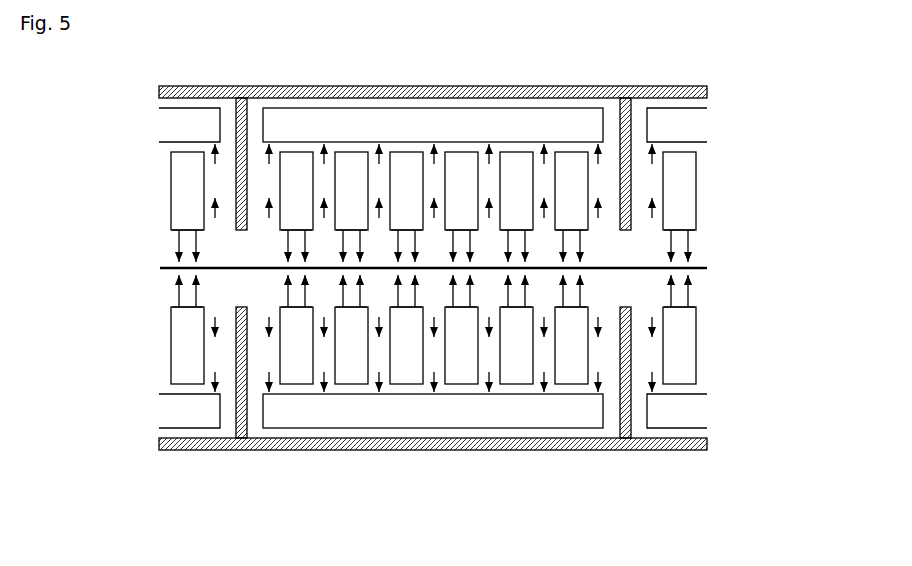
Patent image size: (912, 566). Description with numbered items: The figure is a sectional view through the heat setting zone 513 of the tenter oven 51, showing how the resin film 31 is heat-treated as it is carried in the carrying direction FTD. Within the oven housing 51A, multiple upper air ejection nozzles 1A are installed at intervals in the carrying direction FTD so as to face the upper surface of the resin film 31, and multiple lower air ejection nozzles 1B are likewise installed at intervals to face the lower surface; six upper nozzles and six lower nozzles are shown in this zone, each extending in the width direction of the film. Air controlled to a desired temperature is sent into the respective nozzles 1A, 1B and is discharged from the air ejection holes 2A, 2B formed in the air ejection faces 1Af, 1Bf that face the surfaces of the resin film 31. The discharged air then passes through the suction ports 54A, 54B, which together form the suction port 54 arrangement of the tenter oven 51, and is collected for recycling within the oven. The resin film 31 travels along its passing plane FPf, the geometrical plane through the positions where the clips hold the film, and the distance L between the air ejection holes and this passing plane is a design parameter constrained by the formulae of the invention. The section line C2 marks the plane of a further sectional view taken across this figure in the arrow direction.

The tenter oven 51 is at (237, 77).
The oven housing 51A is at (215, 450).
The suction port 54 is at (433, 273).
The upper suction port 54A is at (390, 142).
The lower suction port 54B is at (412, 395).
The upper air ejection nozzle 1A is at (412, 187).
The air ejection face of upper air ejection nozzle 1Af is at (417, 230).
The air ejection hole of upper nozzle 2A is at (402, 230).
The lower air ejection nozzle 1B is at (410, 350).
The air ejection face of lower air ejection nozzle 1Bf is at (415, 307).
The air ejection hole of lower nozzle 2B is at (399, 307).
The resin film 31 is at (698, 270).
The heat setting zone 513 is at (625, 460).
The distance between air ejection holes and passing plane L is at (162, 230).
The C2-C2 section line C2 is at (324, 132).
The carrying direction FTD is at (828, 270).
The passing plane of resin film FPf is at (270, 268).